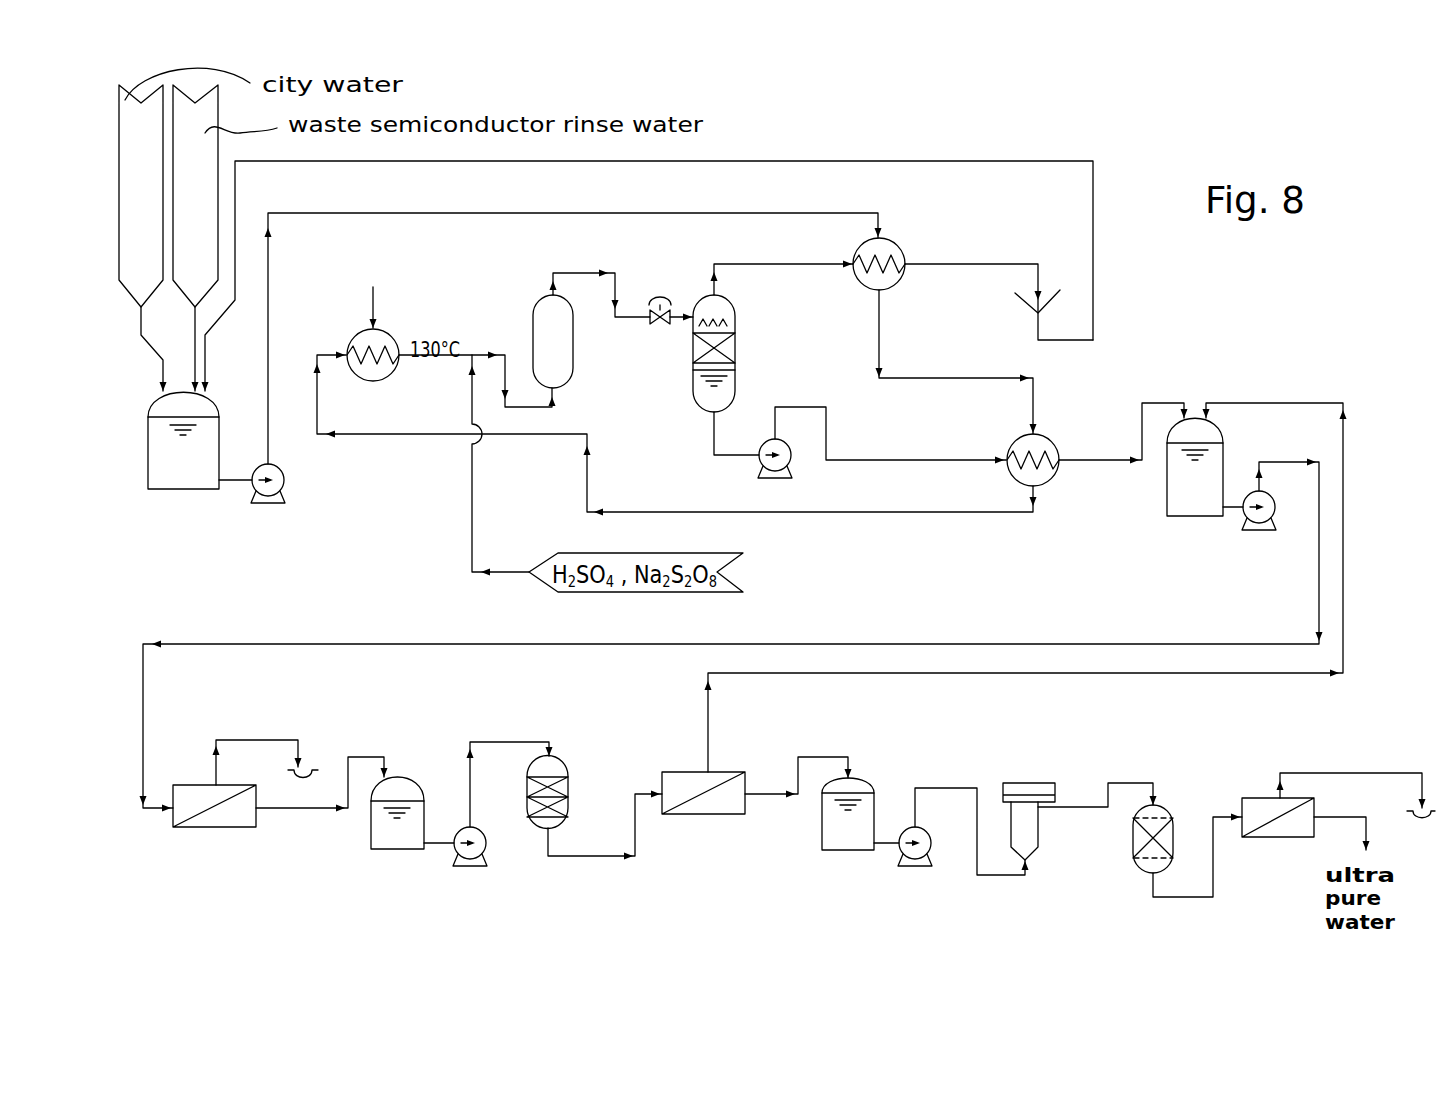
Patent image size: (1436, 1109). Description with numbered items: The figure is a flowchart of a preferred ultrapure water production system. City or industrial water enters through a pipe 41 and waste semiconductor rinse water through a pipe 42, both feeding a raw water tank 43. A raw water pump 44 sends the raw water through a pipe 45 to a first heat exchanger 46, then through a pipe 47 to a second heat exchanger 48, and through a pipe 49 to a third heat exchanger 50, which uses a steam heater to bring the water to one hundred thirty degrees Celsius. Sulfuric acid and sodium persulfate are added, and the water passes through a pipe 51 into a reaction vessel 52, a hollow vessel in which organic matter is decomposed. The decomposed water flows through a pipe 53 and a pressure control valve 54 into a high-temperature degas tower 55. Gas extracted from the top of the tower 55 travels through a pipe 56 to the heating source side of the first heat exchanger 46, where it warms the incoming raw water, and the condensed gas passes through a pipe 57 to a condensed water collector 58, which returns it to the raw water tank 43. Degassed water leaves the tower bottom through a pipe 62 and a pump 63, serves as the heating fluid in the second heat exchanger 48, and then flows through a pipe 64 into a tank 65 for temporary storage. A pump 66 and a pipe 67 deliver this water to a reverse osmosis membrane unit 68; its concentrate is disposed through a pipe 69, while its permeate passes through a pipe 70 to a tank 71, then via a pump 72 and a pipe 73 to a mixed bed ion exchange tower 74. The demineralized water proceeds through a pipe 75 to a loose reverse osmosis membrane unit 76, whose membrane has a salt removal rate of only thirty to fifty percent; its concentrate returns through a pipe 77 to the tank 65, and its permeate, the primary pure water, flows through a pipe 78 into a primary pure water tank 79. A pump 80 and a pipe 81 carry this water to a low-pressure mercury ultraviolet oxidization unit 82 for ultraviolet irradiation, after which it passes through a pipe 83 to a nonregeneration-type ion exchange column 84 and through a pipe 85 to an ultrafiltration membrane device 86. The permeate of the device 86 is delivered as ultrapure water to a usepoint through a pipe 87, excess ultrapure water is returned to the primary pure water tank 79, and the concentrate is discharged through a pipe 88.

The pipe 41 is at (140, 328).
The pipe 42 is at (195, 337).
The raw water tank 43 is at (148, 455).
The raw water pump 44 is at (285, 480).
The pipe 45 is at (380, 213).
The first heat exchanger 46 is at (898, 247).
The pipe 47 is at (900, 380).
The second heat exchanger 48 is at (1045, 435).
The pipe 49 is at (840, 514).
The third heat exchanger 50 is at (353, 337).
The pipe 51 is at (490, 355).
The reaction vessel 52 is at (533, 305).
The pipe 53 is at (575, 273).
The pressure control valve 54 is at (652, 320).
The high-temperature degas tower 55 is at (706, 293).
The pipe 56 is at (793, 266).
The pipe 57 is at (955, 266).
The condensed water collector 58 is at (1025, 306).
The pipe 62 is at (1000, 160).
The pump 63 is at (790, 462).
The pipe 64 is at (1092, 463).
The tank 65 is at (1166, 502).
The pump 66 is at (1274, 510).
The pipe 67 is at (1298, 462).
The reverse osmosis membrane unit 68 is at (187, 828).
The pipe 69 is at (290, 740).
The pipe 70 is at (297, 810).
The tank 71 is at (371, 835).
The pump 72 is at (487, 846).
The pipe 73 is at (500, 740).
The mixed bed ion exchange tower 74 is at (568, 765).
The pipe 75 is at (585, 856).
The loose reverse osmosis membrane unit 76 is at (700, 816).
The pipe 77 is at (765, 675).
The pipe 78 is at (770, 793).
The primary pure water tank 79 is at (840, 852).
The pump 80 is at (928, 832).
The pipe 81 is at (950, 788).
The low-pressure mercury ultraviolet oxidization unit 82 is at (1040, 838).
The pipe 83 is at (1080, 807).
The nonregeneration-type ion exchange column 84 is at (1133, 845).
The pipe 85 is at (1211, 848).
The ultrafiltration membrane device 86 is at (1258, 838).
The pipe 87 is at (1372, 830).
The pipe 88 is at (1315, 773).